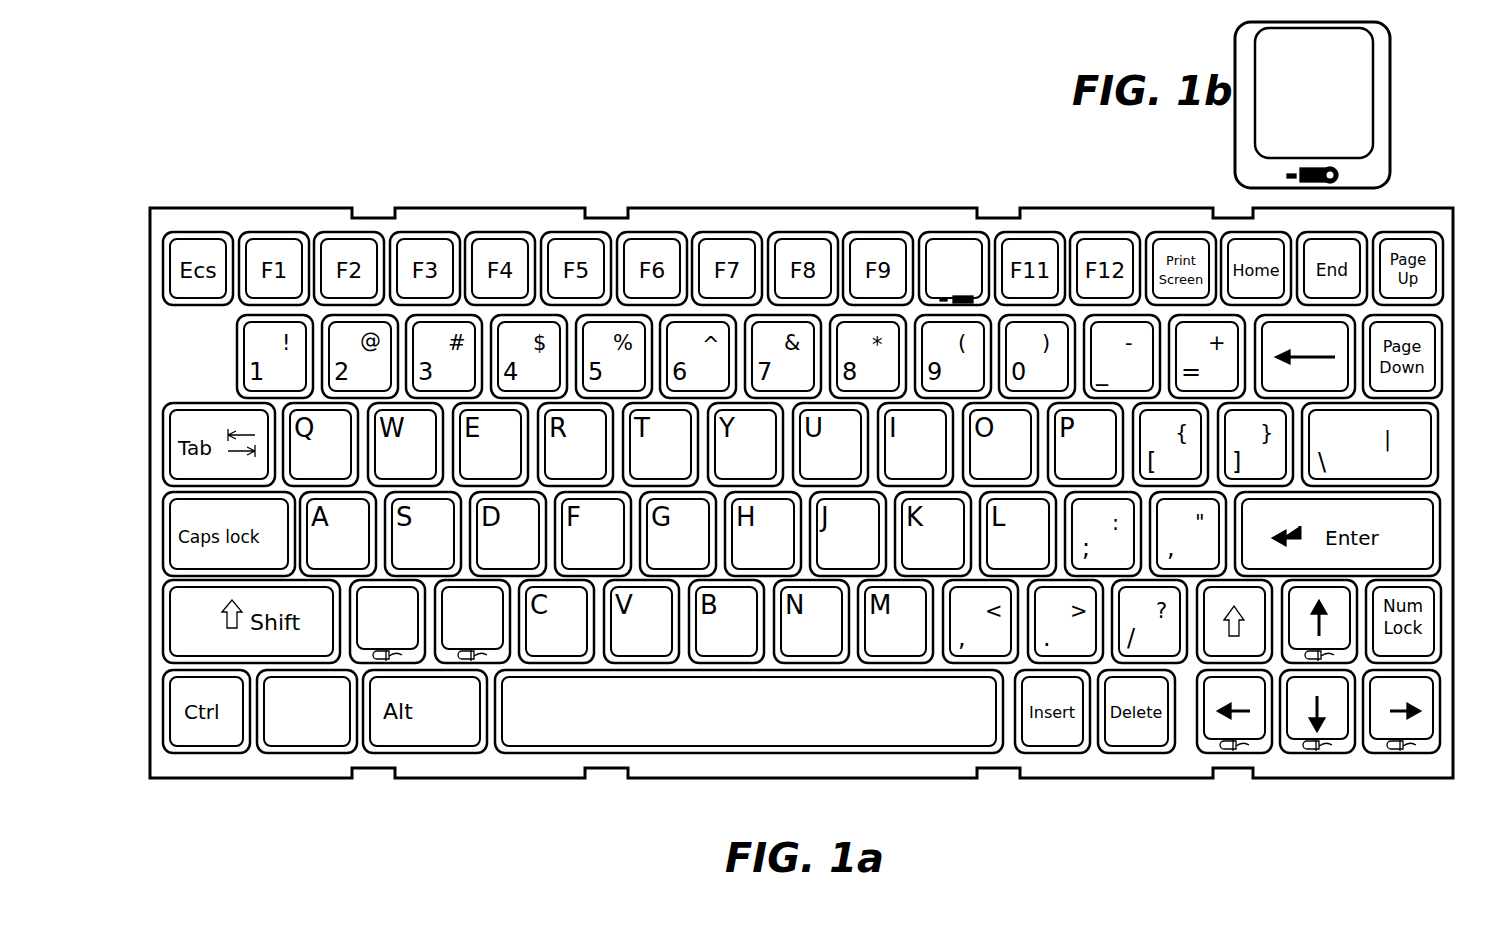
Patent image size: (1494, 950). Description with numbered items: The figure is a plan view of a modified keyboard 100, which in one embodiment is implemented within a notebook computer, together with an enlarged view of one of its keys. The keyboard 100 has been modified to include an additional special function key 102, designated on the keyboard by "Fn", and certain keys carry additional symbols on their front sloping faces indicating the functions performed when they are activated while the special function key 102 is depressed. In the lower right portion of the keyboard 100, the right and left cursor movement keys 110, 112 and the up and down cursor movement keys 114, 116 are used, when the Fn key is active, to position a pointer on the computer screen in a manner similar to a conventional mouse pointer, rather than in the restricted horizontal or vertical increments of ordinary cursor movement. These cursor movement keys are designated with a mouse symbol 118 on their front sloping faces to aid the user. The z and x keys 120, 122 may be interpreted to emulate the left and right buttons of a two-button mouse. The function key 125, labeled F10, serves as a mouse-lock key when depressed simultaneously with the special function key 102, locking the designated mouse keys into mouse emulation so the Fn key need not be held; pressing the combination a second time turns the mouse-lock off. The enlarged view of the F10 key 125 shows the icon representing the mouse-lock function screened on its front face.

In FIG. 1A, the modified keyboard 100 is at (241, 207).
In FIG. 1A, the special function key 102 is at (280, 730).
In FIG. 1A, the right cursor movement key 110 is at (1427, 765).
In FIG. 1A, the left cursor movement key 112 is at (1210, 728).
In FIG. 1A, the up cursor movement key 114 is at (1297, 645).
In FIG. 1A, the down cursor movement key 116 is at (1342, 730).
In FIG. 1A, the mouse symbol 118 is at (1392, 752).
In FIG. 1A, the z key 120 is at (410, 637).
In FIG. 1A, the x key 122 is at (493, 633).
In FIG. 1A, the F10 function key 125 is at (943, 236).
In FIG. 1B, the F10 function key 125 is at (1362, 91).